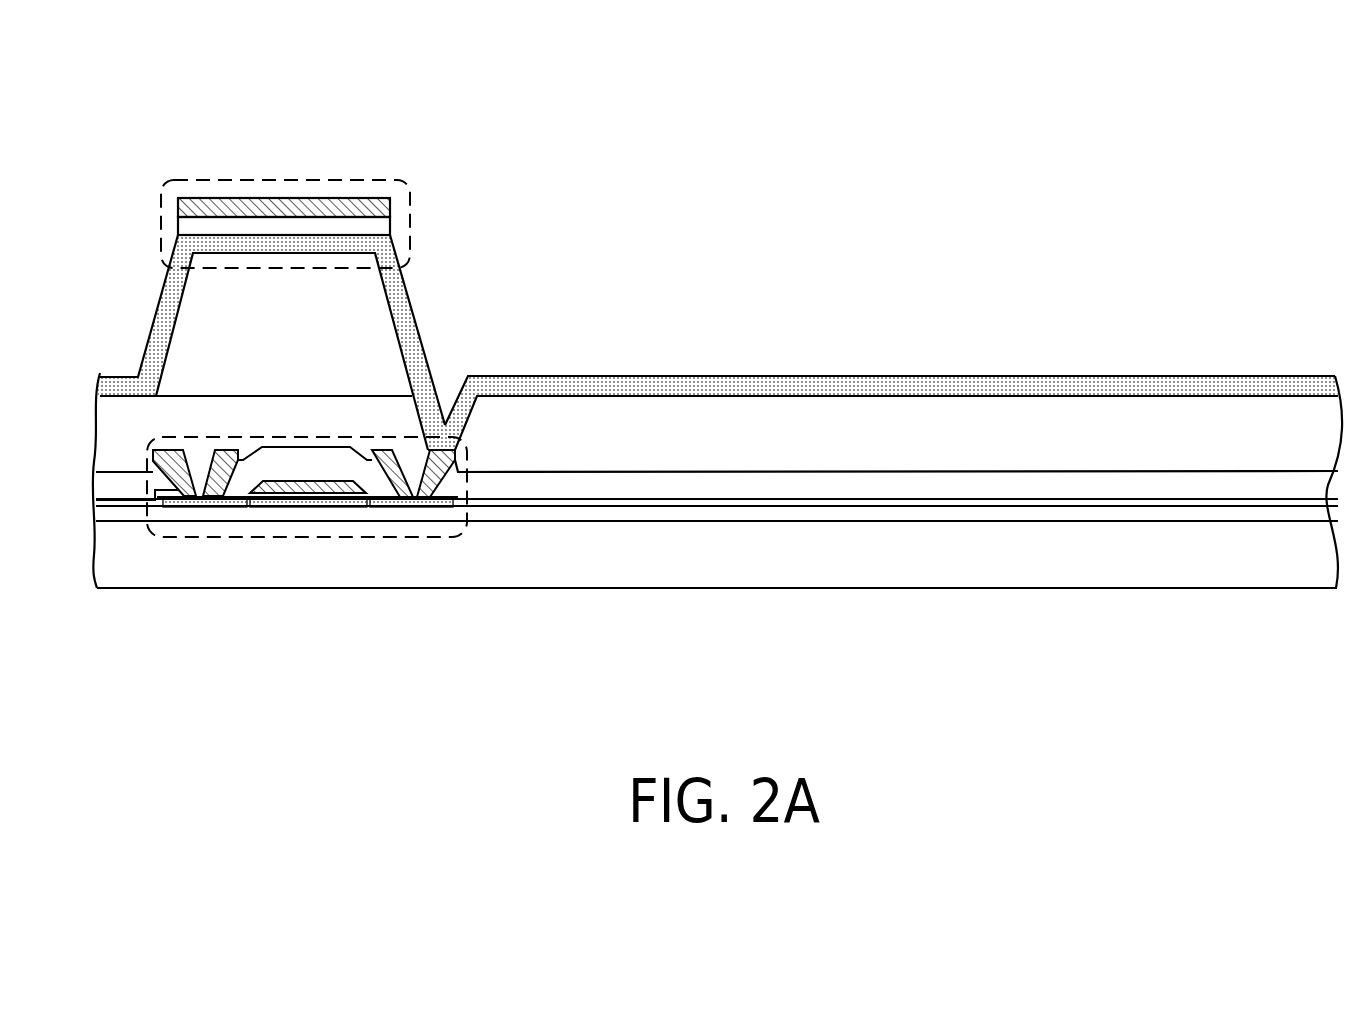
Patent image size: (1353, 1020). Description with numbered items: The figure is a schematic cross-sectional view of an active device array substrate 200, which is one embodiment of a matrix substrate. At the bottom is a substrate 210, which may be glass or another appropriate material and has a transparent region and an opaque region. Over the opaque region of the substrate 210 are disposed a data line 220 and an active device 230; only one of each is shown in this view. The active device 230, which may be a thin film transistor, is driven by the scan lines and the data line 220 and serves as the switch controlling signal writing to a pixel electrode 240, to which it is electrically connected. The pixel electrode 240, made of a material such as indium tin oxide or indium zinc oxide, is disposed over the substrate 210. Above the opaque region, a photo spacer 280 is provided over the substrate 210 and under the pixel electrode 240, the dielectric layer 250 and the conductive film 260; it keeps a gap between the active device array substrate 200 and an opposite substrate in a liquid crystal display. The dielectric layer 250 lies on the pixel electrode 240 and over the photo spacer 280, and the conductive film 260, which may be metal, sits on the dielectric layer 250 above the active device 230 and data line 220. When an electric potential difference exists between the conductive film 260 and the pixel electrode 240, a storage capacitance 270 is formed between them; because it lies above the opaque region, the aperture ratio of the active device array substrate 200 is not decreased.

The active device array substrate 200 is at (1331, 651).
The substrate 210 is at (900, 558).
The data line 220 is at (175, 472).
The active device 230 is at (318, 540).
The pixel electrode 240 is at (730, 387).
The dielectric layer 250 is at (200, 225).
The conductive film 260 is at (272, 206).
The storage capacitance 270 is at (338, 178).
The photo spacer 280 is at (378, 322).